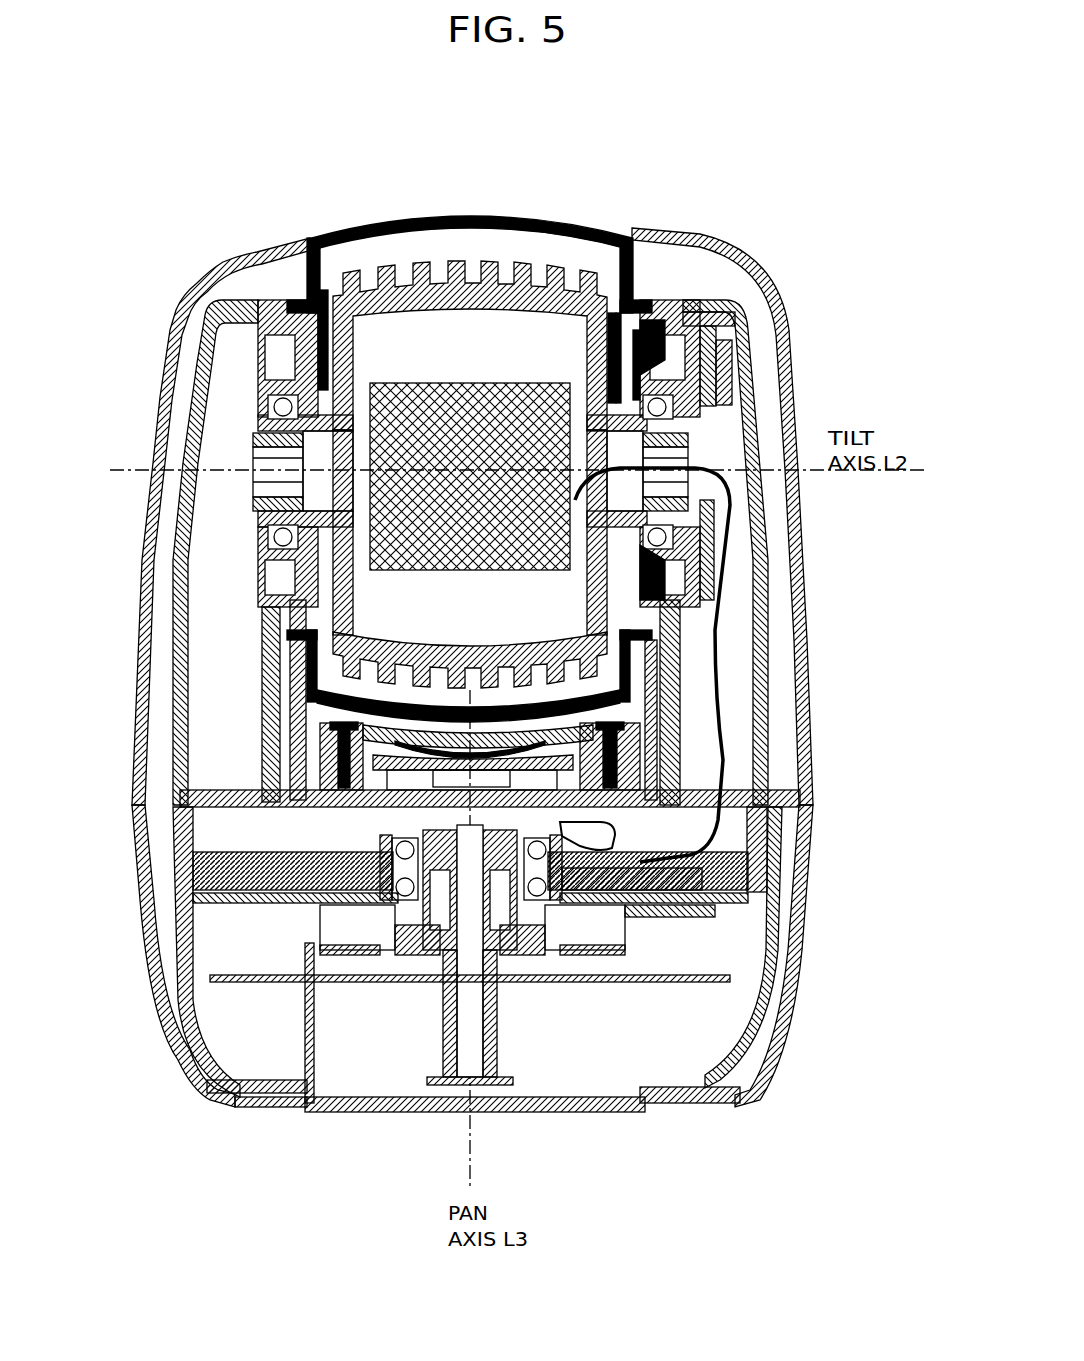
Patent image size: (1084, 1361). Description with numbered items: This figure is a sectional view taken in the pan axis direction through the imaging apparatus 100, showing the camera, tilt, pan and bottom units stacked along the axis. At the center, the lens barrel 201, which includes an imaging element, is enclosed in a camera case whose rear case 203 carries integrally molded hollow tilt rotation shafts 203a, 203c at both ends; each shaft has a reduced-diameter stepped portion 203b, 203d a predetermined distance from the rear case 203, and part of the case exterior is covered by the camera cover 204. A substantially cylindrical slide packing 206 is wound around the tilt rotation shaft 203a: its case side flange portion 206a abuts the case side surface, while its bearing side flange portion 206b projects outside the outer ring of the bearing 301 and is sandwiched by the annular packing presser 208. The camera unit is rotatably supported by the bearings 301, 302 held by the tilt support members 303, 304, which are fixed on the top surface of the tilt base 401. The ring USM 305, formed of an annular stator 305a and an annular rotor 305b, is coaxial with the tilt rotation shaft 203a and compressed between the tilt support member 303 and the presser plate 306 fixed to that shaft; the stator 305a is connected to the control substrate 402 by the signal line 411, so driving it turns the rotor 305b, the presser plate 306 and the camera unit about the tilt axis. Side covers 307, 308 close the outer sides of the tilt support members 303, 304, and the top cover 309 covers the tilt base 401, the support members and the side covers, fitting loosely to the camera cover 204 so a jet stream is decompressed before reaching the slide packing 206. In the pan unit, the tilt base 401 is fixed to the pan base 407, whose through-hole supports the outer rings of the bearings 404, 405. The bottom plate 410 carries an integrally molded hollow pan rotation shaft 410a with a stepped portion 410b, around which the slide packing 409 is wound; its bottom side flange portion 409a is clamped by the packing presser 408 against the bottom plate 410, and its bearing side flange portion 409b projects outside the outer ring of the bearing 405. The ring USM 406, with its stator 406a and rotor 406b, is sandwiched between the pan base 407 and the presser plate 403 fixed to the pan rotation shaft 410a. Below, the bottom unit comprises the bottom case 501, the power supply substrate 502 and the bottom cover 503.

The imaging apparatus 100 is at (840, 156).
The lens barrel 201 is at (410, 400).
The rear case 203 is at (474, 288).
The tilt rotation shaft 203a is at (690, 517).
The stepped portion 203b is at (668, 407).
The tilt rotation shaft 203c is at (260, 420).
The stepped portion 203d is at (283, 513).
The camera cover 204 is at (337, 232).
The slide packing 206 is at (660, 560).
The case side flange portion 206a is at (623, 392).
The bearing side flange portion 206b is at (642, 375).
The packing presser 208 is at (617, 320).
The bearing 301 is at (665, 537).
The bearing 302 is at (272, 537).
The tilt support member 303 is at (655, 730).
The tilt support member 304 is at (270, 640).
The ring USM 305 is at (790, 210).
The stator 305a is at (670, 378).
The rotor 305b is at (693, 347).
The presser plate 306 is at (705, 528).
The side cover 307 is at (752, 430).
The side cover 308 is at (205, 348).
The top cover 309 is at (226, 272).
The tilt base 401 is at (182, 838).
The control substrate 402 is at (325, 765).
The presser plate 403 is at (600, 815).
The bearing 404 is at (190, 815).
The bearing 405 is at (395, 890).
The ring USM 406 is at (898, 815).
The stator 406a is at (705, 880).
The rotor 406b is at (605, 825).
The pan base 407 is at (185, 862).
The packing presser 408 is at (340, 930).
The slide packing 409 is at (622, 937).
The bottom side flange portion 409a is at (570, 940).
The bearing side flange portion 409b is at (630, 913).
The bottom plate 410 is at (185, 922).
The pan rotation shaft 410a is at (525, 935).
The stepped portion 410b is at (425, 925).
The signal line 411 is at (583, 490).
The bottom case 501 is at (218, 1080).
The power supply substrate 502 is at (245, 983).
The bottom cover 503 is at (762, 1037).